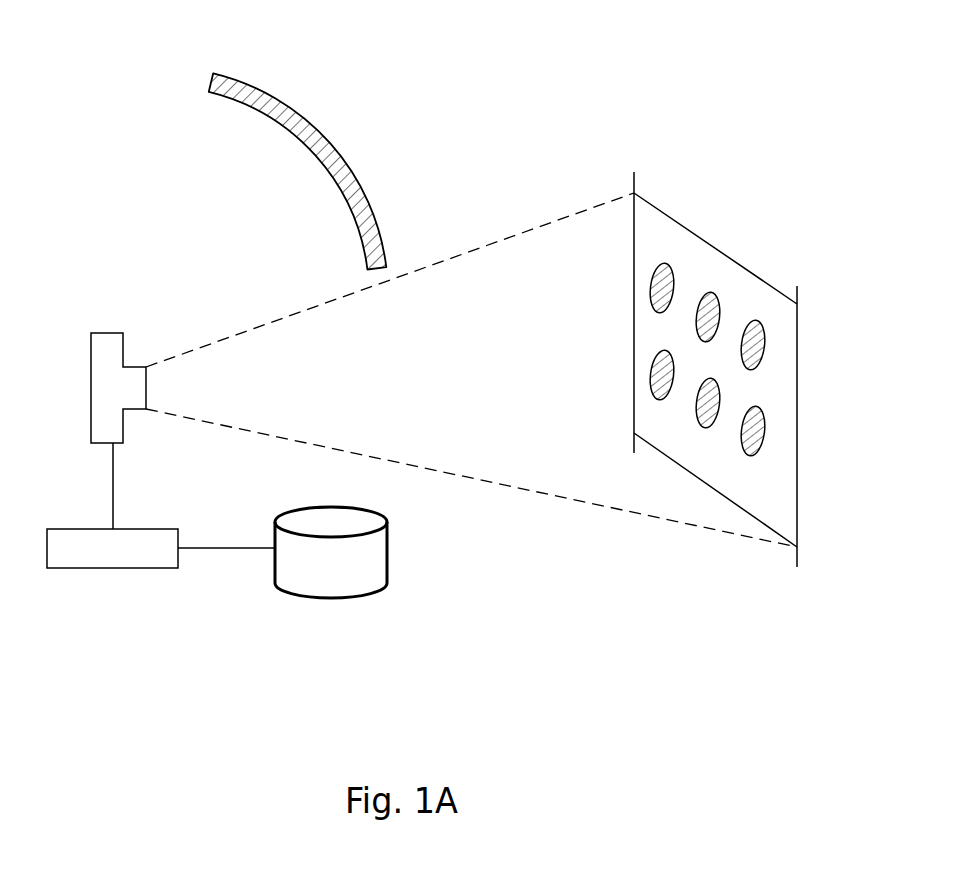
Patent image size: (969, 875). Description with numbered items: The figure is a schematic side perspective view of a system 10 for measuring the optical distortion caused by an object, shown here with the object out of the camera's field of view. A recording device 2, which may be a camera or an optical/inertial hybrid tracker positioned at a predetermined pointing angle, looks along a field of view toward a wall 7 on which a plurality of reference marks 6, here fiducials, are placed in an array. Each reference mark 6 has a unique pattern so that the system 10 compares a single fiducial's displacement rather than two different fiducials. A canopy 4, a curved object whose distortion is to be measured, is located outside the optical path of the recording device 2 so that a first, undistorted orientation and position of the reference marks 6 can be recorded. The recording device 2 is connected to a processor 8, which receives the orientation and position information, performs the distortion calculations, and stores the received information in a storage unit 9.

The recording device 2 is at (113, 333).
The canopy 4 is at (332, 115).
The reference marks 6 is at (763, 347).
The wall 7 is at (687, 225).
The processor 8 is at (113, 568).
The storage unit 9 is at (387, 560).
The system 10 is at (638, 119).